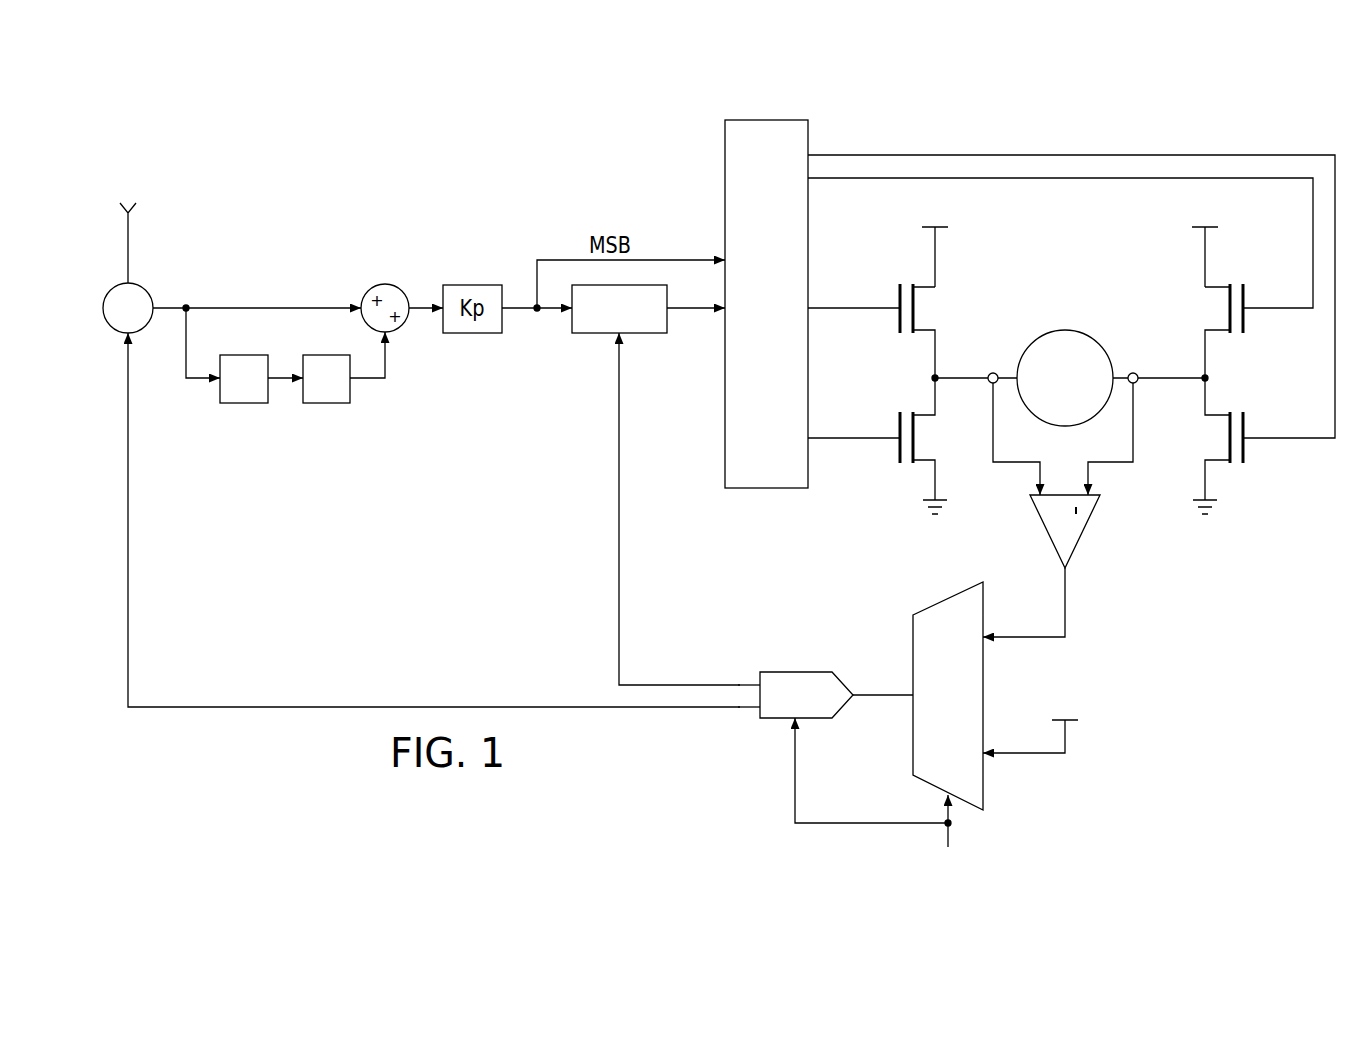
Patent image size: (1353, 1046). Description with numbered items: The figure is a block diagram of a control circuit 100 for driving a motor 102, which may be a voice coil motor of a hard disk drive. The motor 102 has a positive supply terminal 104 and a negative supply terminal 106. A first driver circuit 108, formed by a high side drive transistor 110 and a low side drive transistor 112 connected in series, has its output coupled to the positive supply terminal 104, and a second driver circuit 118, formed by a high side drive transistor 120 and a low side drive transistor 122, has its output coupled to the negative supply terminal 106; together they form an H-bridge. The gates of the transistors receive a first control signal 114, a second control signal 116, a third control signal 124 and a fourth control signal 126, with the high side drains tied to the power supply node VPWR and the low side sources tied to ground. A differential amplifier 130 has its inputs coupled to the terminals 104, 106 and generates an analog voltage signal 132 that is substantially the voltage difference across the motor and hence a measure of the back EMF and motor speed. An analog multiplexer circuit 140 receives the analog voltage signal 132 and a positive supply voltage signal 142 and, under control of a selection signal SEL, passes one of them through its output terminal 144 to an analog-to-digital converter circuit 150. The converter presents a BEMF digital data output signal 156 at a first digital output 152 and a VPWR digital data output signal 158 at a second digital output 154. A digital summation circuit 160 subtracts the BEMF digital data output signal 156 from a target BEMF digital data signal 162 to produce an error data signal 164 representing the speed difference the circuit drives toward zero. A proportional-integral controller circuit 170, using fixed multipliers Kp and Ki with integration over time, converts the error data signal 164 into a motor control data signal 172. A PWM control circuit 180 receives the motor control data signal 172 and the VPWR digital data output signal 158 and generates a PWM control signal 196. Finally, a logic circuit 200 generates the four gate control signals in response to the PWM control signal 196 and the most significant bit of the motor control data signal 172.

The control circuit 100 is at (490, 136).
The motor 102 is at (1065, 330).
The positive supply terminal 104 is at (993, 372).
The negative supply terminal 106 is at (1135, 372).
The first driver circuit 108 is at (887, 387).
The high side drive transistor 110 is at (897, 318).
The low side drive transistor 112 is at (897, 448).
The first control signal 114 is at (866, 307).
The second control signal 116 is at (866, 437).
The second driver circuit 118 is at (1071, 368).
The high side drive transistor 120 is at (1246, 319).
The low side drive transistor 122 is at (1246, 449).
The third control signal 124 is at (1265, 309).
The fourth control signal 126 is at (1265, 437).
The differential amplifier 130 is at (1088, 530).
The analog voltage signal 132 is at (1067, 602).
The analog multiplexer circuit 140 is at (970, 731).
The positive supply voltage signal 142 is at (1030, 755).
The output terminal 144 is at (882, 693).
The analog-to-digital converter circuit 150 is at (842, 711).
The first digital output 152 is at (750, 710).
The second digital output 154 is at (750, 683).
The BEMF digital data output signal 156 is at (175, 710).
The VPWR digital data output signal 158 is at (617, 603).
The digital summation circuit 160 is at (103, 308).
The target BEMF digital data signal 162 is at (125, 250).
The error data signal 164 is at (313, 306).
The proportional-integral controller circuit 170 is at (363, 420).
The motor control data signal 172 is at (523, 313).
The PWM control circuit 180 is at (597, 334).
The PWM control signal 196 is at (695, 311).
The logic circuit 200 is at (765, 120).